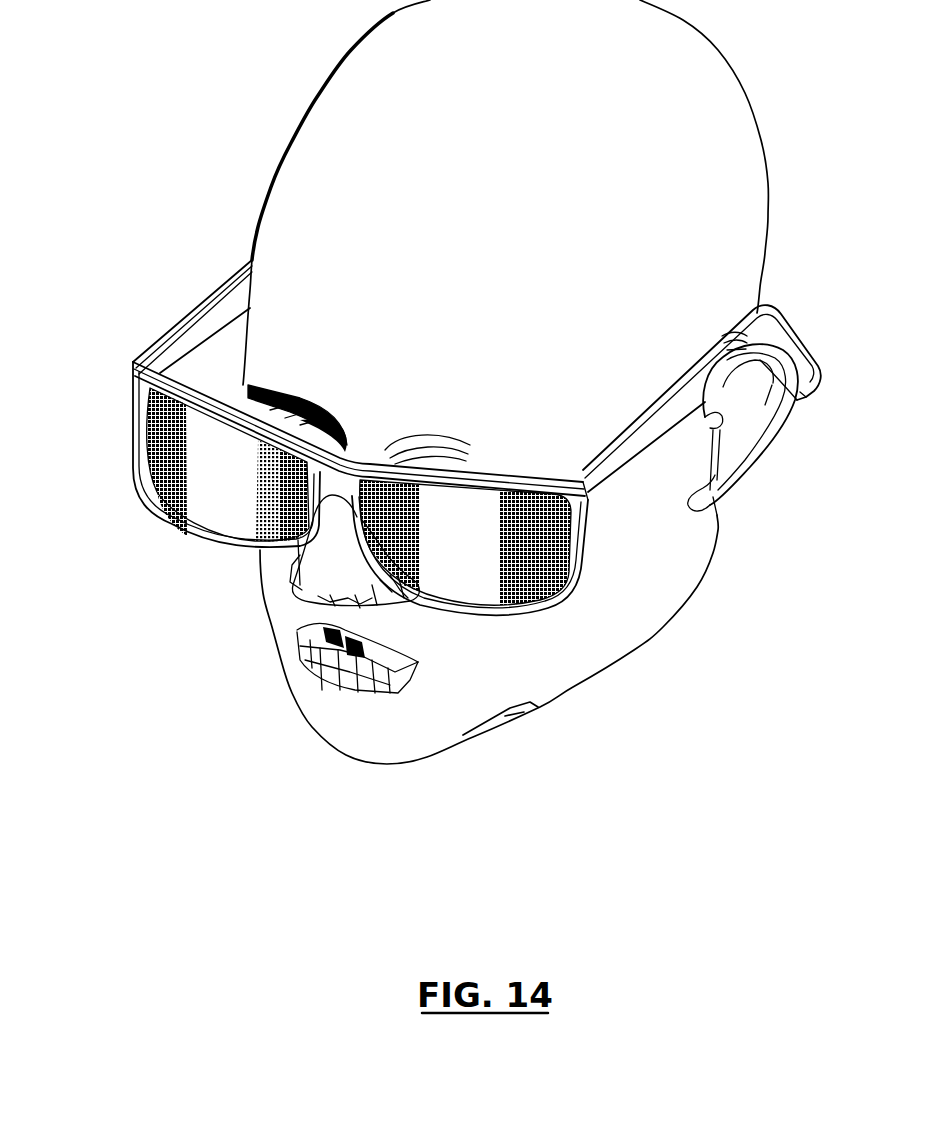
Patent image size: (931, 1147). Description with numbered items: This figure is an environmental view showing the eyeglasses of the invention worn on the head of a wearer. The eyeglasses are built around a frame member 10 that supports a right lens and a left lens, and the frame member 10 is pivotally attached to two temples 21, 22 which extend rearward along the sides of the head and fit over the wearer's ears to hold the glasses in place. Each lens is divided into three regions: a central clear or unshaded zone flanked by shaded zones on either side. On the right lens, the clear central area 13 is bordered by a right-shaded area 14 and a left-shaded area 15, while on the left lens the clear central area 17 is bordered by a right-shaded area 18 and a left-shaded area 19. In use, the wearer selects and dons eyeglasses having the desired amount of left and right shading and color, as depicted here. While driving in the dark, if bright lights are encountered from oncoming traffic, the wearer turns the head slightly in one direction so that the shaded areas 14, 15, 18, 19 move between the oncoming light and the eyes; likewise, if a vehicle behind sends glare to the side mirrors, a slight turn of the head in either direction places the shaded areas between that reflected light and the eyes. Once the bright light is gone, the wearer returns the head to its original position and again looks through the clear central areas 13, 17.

The frame member 10 is at (192, 384).
The clear central area 13 is at (222, 515).
The right-shaded area 14 is at (140, 457).
The left-shaded area 15 is at (293, 403).
The clear central area 17 is at (477, 475).
The right-shaded area 18 is at (387, 483).
The left-shaded area 19 is at (550, 490).
The temple 21 is at (228, 308).
The temple 22 is at (666, 423).